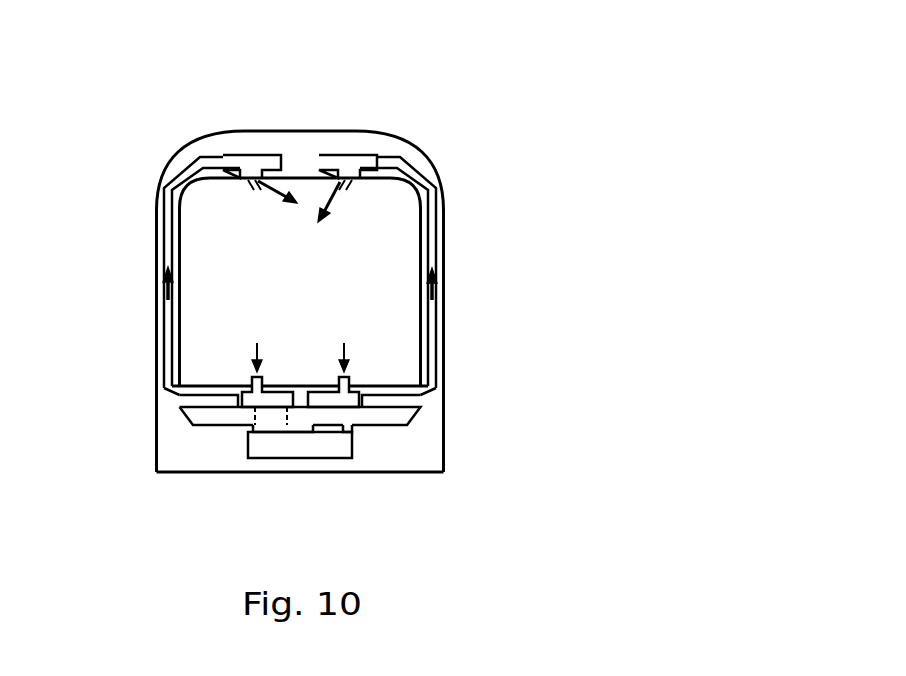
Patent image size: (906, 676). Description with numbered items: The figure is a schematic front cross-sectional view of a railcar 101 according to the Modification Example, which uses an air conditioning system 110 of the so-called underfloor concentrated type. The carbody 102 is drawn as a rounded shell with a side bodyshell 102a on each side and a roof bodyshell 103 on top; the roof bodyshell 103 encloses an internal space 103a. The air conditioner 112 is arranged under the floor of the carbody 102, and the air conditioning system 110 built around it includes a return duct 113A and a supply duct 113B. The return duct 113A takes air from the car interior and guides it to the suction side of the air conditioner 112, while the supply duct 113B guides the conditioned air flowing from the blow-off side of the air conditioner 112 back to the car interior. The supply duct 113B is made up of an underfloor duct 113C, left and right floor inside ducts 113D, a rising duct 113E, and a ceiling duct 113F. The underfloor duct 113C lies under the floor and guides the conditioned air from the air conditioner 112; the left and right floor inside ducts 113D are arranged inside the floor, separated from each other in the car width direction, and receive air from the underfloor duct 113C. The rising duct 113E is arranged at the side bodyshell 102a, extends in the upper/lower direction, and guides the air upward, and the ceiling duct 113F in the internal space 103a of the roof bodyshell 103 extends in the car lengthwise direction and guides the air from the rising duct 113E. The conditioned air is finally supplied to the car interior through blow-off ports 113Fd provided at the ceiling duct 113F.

The railcar 101 is at (313, 294).
The carbody 102 is at (163, 165).
The side bodyshell 102a is at (158, 313).
The roof bodyshell 103 is at (217, 137).
The internal space 103a is at (296, 140).
The air conditioning system 110 is at (322, 470).
The air conditioner 112 is at (279, 450).
The return duct 113A is at (326, 400).
The supply duct 113B is at (447, 355).
The underfloor duct 113C is at (357, 418).
The floor inside ducts 113D is at (214, 400).
The rising duct 113E is at (168, 245).
The ceiling duct 113F is at (248, 155).
The blow-off ports 113Fd is at (250, 188).